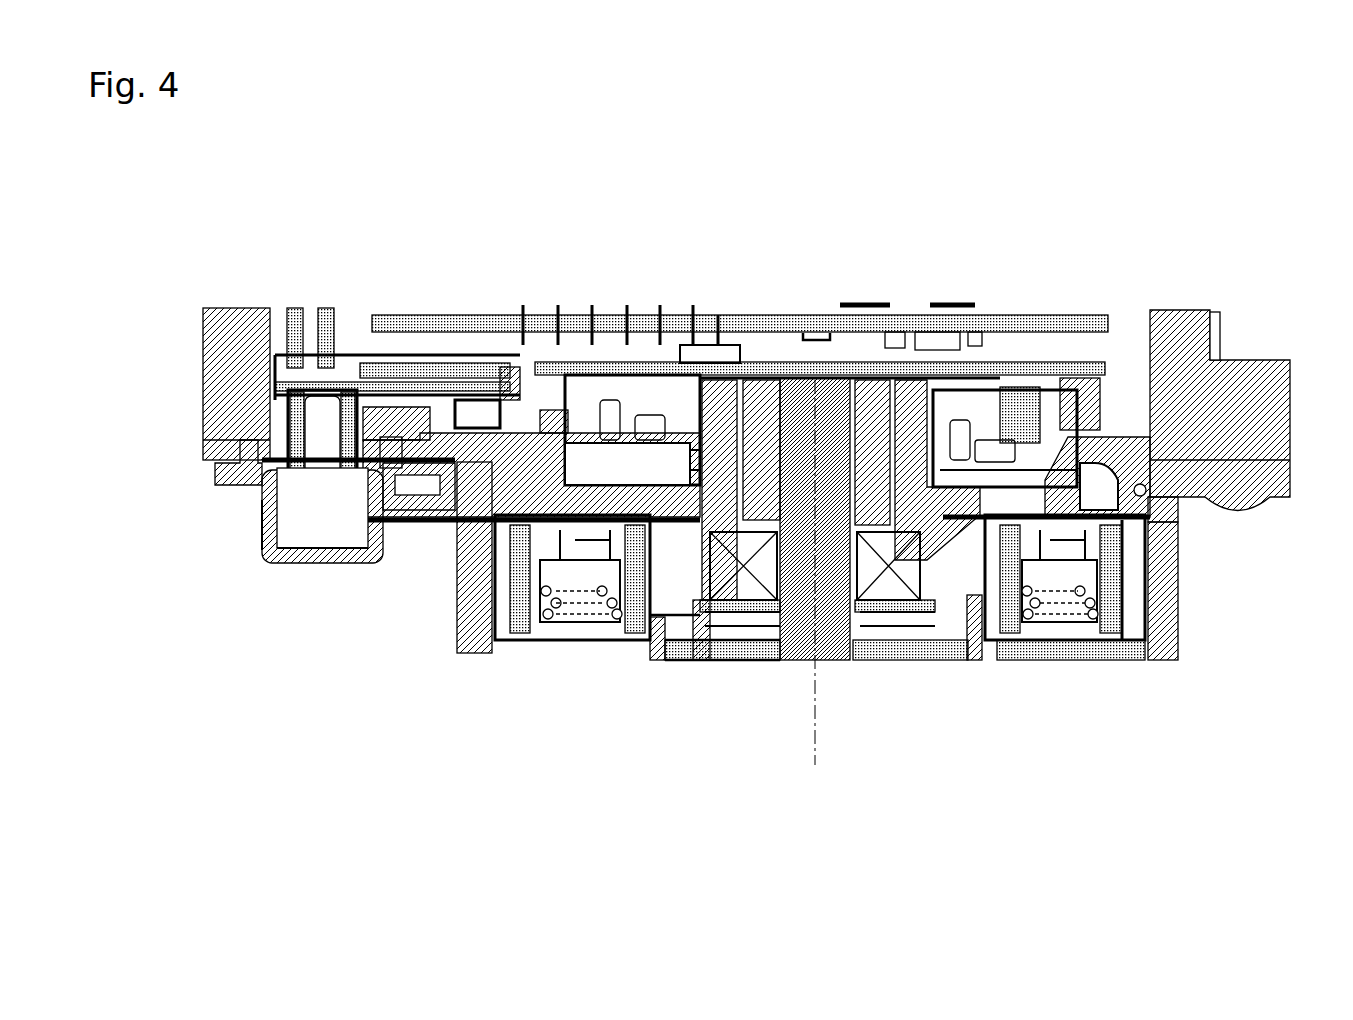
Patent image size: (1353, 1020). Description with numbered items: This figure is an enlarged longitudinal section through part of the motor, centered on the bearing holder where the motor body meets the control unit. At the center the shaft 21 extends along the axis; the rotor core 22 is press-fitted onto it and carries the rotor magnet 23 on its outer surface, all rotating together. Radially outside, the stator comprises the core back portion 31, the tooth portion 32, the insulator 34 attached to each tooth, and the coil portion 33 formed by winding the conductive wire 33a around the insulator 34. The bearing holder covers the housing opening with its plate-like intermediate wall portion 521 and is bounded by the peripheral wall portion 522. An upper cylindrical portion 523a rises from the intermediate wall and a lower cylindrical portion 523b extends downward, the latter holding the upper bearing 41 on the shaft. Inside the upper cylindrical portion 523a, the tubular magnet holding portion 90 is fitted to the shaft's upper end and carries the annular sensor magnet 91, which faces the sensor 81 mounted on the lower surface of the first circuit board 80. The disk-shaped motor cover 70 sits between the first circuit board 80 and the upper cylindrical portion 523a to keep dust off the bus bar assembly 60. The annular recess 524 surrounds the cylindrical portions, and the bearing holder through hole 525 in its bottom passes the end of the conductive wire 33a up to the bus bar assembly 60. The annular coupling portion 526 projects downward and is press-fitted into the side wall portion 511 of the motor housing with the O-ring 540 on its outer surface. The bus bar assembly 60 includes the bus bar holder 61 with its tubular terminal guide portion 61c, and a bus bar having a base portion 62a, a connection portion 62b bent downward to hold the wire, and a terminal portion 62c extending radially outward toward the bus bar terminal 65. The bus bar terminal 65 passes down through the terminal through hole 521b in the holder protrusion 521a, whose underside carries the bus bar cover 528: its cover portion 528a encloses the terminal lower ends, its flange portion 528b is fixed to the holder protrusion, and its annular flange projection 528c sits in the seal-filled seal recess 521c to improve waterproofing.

The shaft 21 is at (832, 655).
The rotor core 22 is at (745, 655).
The rotor magnet 23 is at (690, 632).
The core back portion 31 is at (1135, 632).
The tooth portion 32 is at (1025, 652).
The coil portion 33 is at (1050, 642).
The conductive wire 33a is at (975, 560).
The insulator 34 is at (1106, 622).
The upper bearing 41 is at (776, 620).
The bus bar assembly 60 is at (520, 390).
The bus bar holder 61 is at (365, 350).
The terminal guide portion 61c is at (262, 540).
The base portion 62a is at (505, 355).
The connection portion 62b is at (600, 390).
The terminal portion 62c is at (470, 385).
The bus bar terminal 65 is at (318, 420).
The motor cover 70 is at (995, 372).
The first circuit board 80 is at (555, 315).
The sensor 81 is at (820, 330).
The magnet holding portion 90 is at (690, 345).
The sensor magnet 91 is at (775, 365).
The side wall portion 511 is at (1180, 605).
The intermediate wall portion 521 is at (1113, 350).
The holder protrusion 521a is at (440, 500).
The terminal through hole 521b is at (262, 410).
The seal recess 521c is at (252, 420).
The peripheral wall portion 522 is at (1225, 305).
The upper cylindrical portion 523a is at (718, 350).
The lower cylindrical portion 523b is at (703, 645).
The recess 524 is at (1035, 380).
The bearing holder through hole 525 is at (1040, 455).
The annular coupling portion 526 is at (1132, 470).
The bus bar cover 528 is at (312, 565).
The cover portion 528a is at (283, 565).
The flange portion 528b is at (222, 490).
The flange projection 528c is at (395, 470).
The O-ring 540 is at (457, 530).